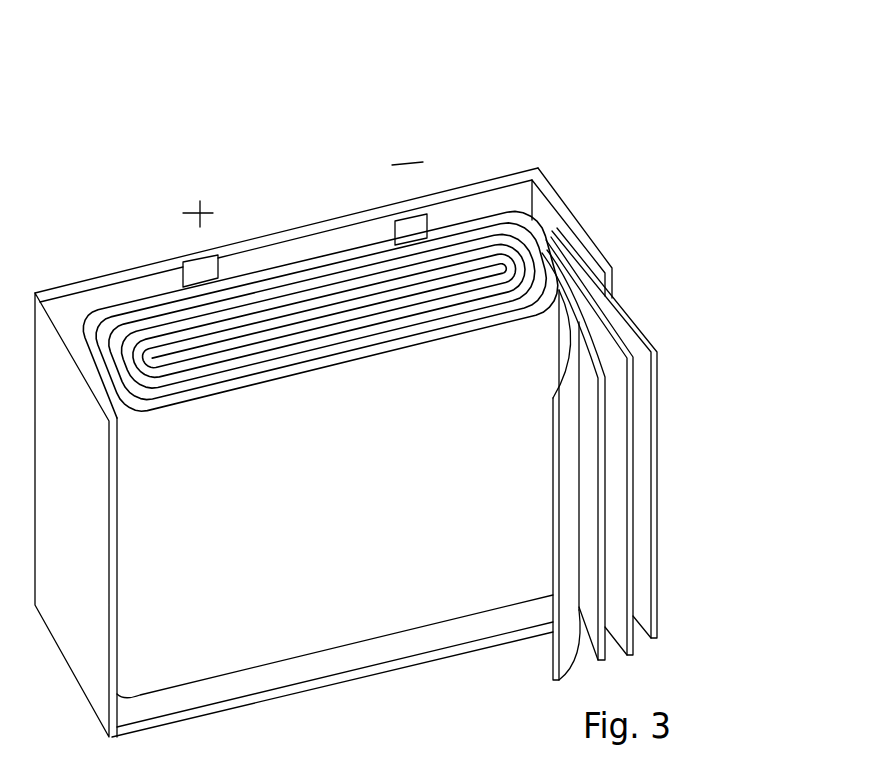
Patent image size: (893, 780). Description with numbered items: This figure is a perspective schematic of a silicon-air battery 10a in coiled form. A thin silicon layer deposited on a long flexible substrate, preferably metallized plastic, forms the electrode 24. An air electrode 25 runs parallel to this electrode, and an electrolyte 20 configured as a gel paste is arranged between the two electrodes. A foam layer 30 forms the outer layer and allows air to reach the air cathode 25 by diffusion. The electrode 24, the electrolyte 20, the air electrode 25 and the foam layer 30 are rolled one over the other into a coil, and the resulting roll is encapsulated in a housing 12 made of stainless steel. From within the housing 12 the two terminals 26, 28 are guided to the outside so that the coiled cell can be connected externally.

The battery cell 10a is at (578, 106).
The housing 12 is at (570, 243).
The terminal 26 is at (197, 270).
The terminal 28 is at (410, 222).
The electrode 24 is at (553, 663).
The electrolyte 20 is at (606, 590).
The air electrode 25 is at (631, 450).
The foam layer 30 is at (650, 513).